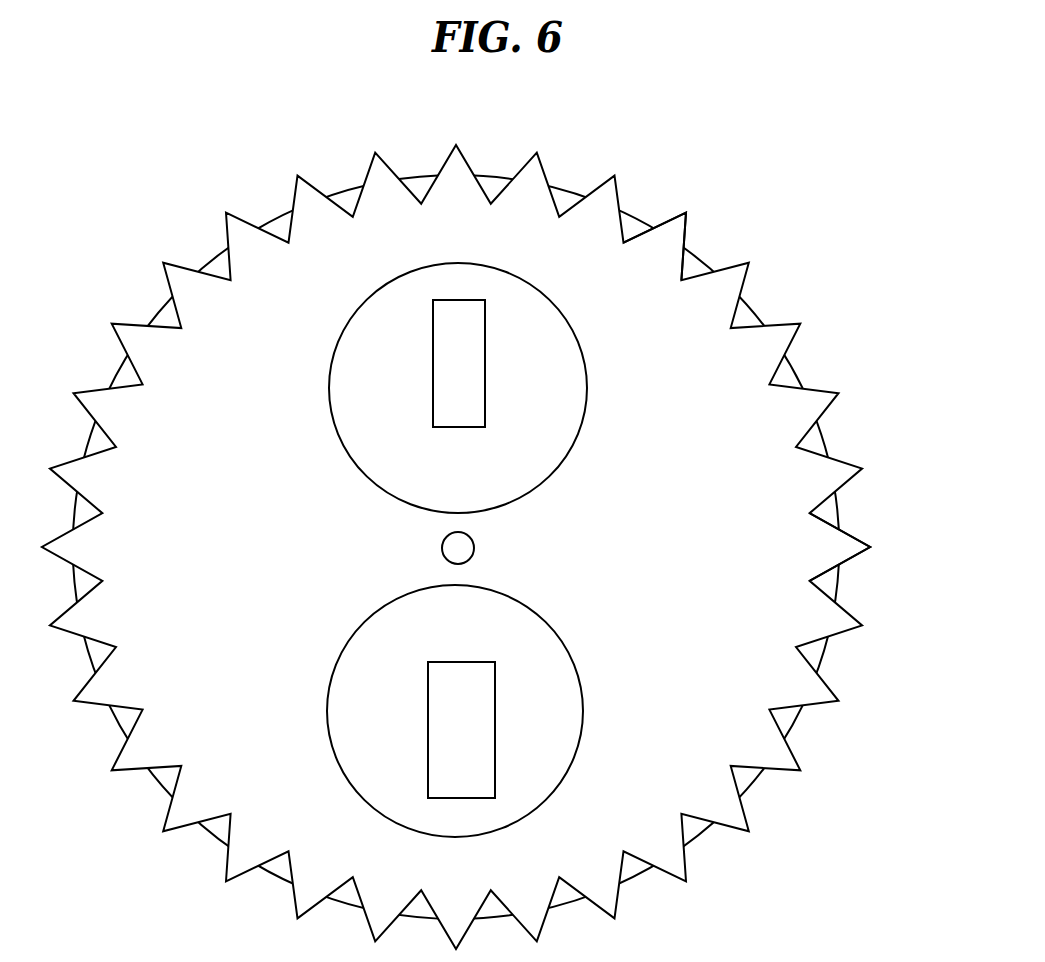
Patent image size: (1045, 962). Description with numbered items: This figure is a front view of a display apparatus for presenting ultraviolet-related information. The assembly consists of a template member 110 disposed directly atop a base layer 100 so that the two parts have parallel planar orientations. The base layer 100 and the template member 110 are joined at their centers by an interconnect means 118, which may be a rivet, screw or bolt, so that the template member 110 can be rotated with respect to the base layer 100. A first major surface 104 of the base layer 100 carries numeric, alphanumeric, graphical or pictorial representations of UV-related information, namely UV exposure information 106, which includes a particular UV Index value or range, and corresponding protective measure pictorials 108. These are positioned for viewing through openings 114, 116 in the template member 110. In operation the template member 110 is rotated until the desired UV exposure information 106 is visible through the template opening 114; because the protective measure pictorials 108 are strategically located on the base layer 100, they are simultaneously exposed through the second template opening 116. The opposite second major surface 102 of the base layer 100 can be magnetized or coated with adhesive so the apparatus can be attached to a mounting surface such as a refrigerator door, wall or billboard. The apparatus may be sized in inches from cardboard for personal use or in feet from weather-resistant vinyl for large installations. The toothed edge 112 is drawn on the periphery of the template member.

The base layer 100 is at (792, 367).
The second major surface 102 is at (832, 455).
The first major surface 104 is at (466, 550).
The UV exposure information 106 is at (459, 363).
The protective measure pictorials 108 is at (461, 730).
The template member 110 is at (741, 264).
The tooth 112 is at (848, 550).
The template opening 114 is at (330, 396).
The second template opening 116 is at (327, 708).
The interconnect means 118 is at (463, 547).